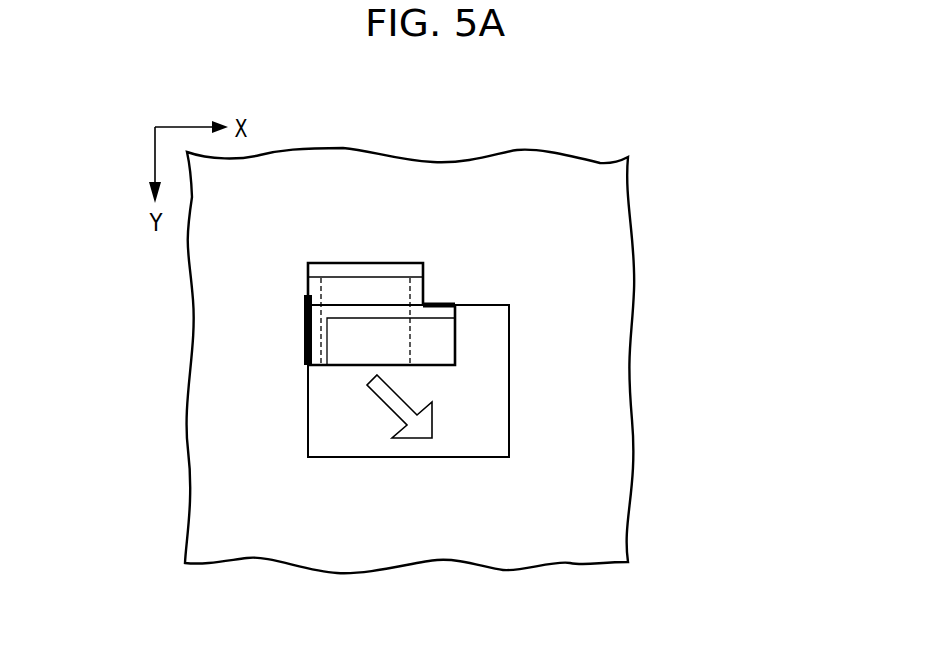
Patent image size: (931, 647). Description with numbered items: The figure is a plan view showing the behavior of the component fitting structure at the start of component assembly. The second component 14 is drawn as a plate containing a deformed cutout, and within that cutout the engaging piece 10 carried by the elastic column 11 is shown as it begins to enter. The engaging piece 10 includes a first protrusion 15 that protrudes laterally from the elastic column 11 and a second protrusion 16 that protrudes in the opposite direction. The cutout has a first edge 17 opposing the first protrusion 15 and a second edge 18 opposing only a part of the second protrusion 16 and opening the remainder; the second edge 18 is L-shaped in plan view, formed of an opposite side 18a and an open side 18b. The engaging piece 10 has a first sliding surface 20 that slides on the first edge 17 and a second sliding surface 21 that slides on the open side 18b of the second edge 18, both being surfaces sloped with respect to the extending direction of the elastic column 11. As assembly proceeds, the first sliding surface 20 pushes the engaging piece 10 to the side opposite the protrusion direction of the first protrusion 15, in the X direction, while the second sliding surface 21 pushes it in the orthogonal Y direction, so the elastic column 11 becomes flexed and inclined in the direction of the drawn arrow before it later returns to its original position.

The engaging piece 10 is at (733, 403).
The elastic column 11 is at (307, 287).
The second component 14 is at (595, 210).
The first protrusion 15 is at (317, 290).
The second protrusion 16 is at (438, 342).
The first edge 17 is at (315, 350).
The second edge 18 is at (733, 245).
The opposite side 18a is at (415, 292).
The open side 18b is at (437, 318).
The first sliding surface 20 is at (304, 337).
The second sliding surface 21 is at (368, 288).